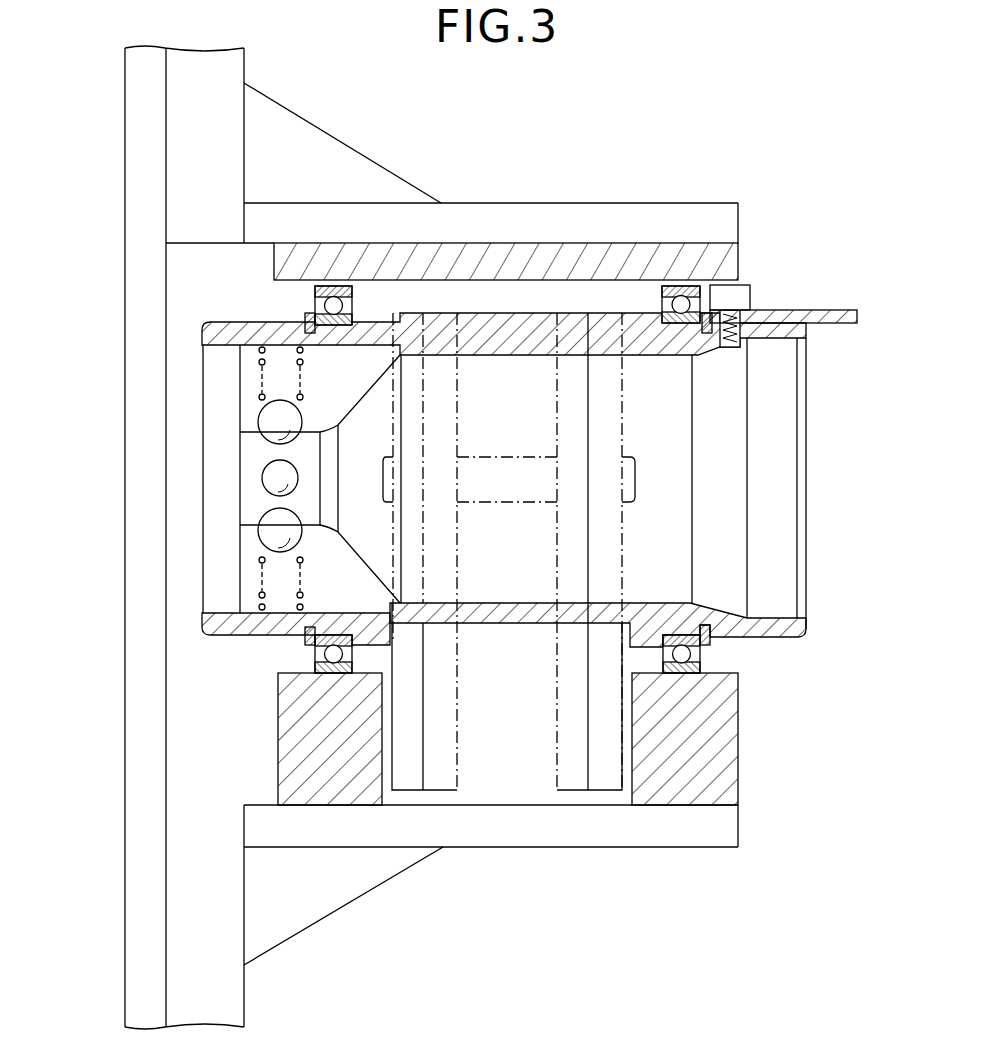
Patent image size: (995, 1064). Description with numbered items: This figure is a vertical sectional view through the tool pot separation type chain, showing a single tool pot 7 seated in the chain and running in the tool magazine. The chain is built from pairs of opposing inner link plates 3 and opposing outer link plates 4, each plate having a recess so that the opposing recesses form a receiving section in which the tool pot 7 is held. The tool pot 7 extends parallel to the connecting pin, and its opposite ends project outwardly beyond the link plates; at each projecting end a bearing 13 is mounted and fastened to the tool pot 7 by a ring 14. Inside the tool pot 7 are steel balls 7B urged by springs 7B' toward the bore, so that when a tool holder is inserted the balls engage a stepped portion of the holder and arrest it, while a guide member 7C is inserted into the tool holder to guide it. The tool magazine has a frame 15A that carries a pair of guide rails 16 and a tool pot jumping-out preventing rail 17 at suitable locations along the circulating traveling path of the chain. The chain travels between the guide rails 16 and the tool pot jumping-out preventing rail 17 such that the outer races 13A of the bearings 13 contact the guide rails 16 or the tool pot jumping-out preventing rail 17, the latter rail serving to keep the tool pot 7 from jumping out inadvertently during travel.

The inner link plate 3 is at (448, 782).
The outer link plate 4 is at (405, 782).
The tool pot 7 is at (660, 515).
The steel ball 7B is at (175, 535).
The spring 7B' is at (170, 404).
The guide member 7C is at (820, 313).
The bearing 13 is at (332, 292).
The outer race 13A is at (684, 288).
The ring 14 is at (305, 320).
The frame 15A is at (143, 385).
The guide rail 16 is at (290, 778).
The tool pot jumping-out preventing rail 17 is at (540, 250).